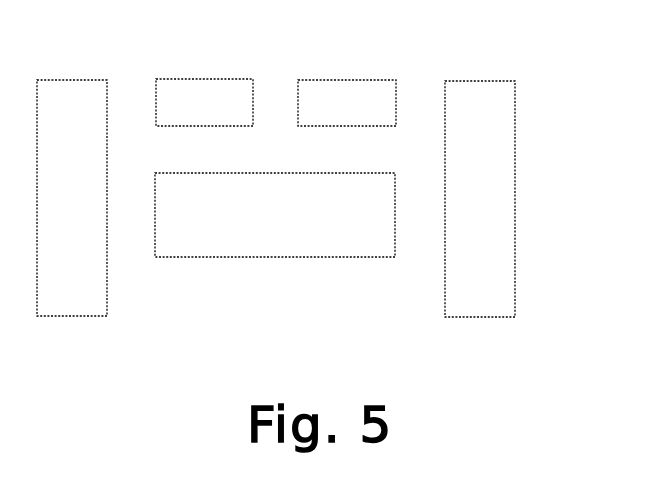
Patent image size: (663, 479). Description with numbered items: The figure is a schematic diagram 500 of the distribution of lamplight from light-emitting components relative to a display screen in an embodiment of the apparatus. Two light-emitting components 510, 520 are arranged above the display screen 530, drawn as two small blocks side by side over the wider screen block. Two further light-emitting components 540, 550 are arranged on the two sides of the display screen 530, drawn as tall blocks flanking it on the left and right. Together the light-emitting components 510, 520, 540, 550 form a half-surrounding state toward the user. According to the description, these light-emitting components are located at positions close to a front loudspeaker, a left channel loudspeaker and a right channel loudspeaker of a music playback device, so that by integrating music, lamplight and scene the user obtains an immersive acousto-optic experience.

The electronic device / system 500 is at (276, 167).
The light-emitting component 510 is at (204, 102).
The light-emitting component 520 is at (347, 103).
The display screen 530 is at (275, 215).
The light-emitting component 540 is at (72, 198).
The light-emitting component 550 is at (480, 199).